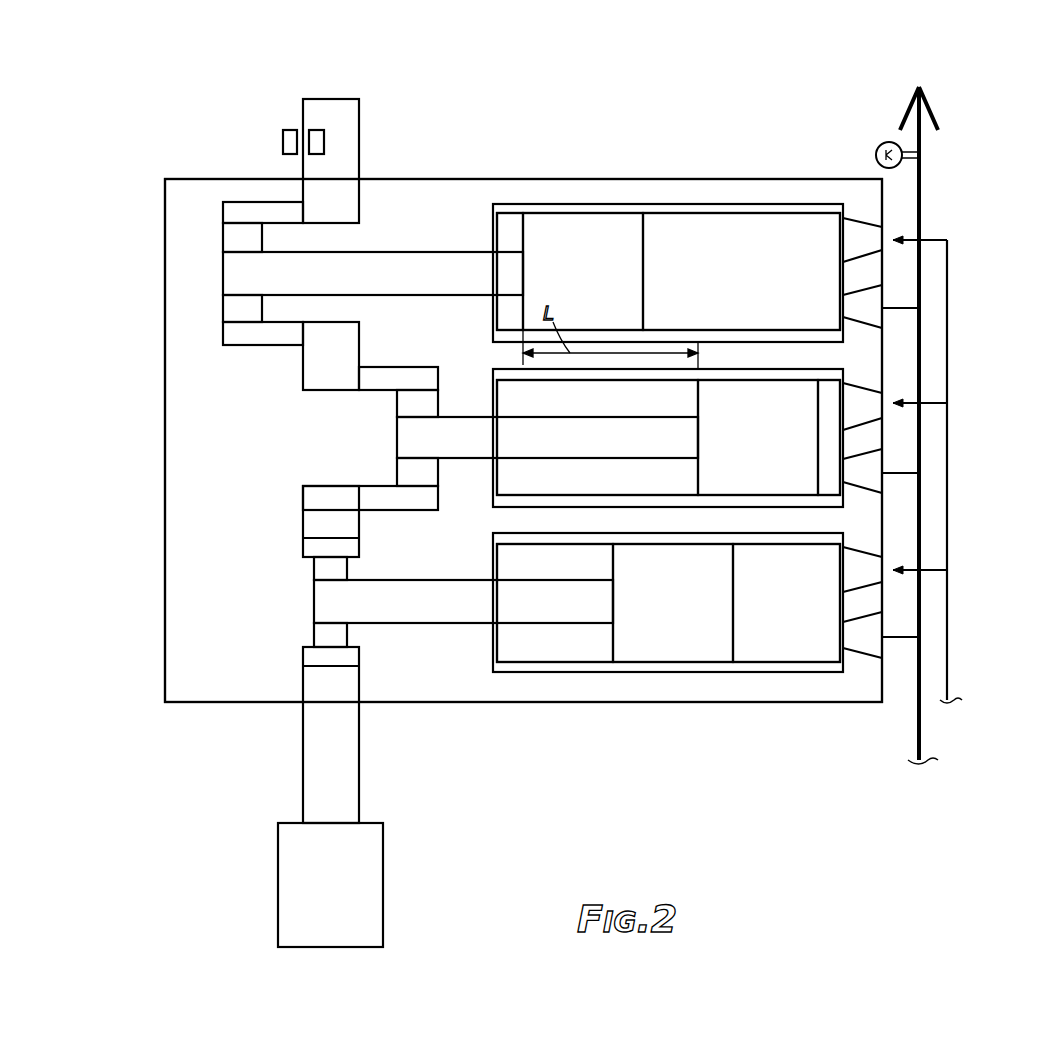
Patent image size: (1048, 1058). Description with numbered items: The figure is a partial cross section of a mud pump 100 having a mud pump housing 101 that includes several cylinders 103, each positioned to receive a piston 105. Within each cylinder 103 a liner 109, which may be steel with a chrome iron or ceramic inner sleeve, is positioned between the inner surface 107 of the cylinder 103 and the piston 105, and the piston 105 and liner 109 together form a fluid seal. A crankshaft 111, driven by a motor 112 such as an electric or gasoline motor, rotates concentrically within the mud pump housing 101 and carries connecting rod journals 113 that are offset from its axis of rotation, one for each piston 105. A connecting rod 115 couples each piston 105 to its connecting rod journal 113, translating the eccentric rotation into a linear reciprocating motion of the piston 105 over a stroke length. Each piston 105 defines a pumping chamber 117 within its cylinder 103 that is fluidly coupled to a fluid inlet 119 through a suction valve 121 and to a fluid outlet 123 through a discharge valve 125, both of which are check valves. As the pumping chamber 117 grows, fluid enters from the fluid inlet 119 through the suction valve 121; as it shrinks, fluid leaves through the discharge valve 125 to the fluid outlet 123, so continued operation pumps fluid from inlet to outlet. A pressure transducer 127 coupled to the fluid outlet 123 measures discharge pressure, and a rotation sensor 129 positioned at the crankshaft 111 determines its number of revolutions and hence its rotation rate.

The mud pump 100 is at (168, 93).
The mud pump housing 101 is at (432, 178).
The cylinder 103 is at (700, 223).
The piston 105 is at (670, 437).
The inner surface 107 is at (700, 225).
The liner 109 is at (750, 213).
The crankshaft 111 is at (360, 110).
The motor 112 is at (278, 858).
The connecting rod journal 113 is at (222, 240).
The connecting rod 115 is at (460, 437).
The pumping chamber 117 is at (990, 440).
The fluid inlet 119 is at (921, 725).
The suction valve 121 is at (868, 234).
The fluid outlet 123 is at (922, 175).
The discharge valve 125 is at (872, 300).
The pressure transducer 127 is at (885, 143).
The rotation sensor 129 is at (290, 130).